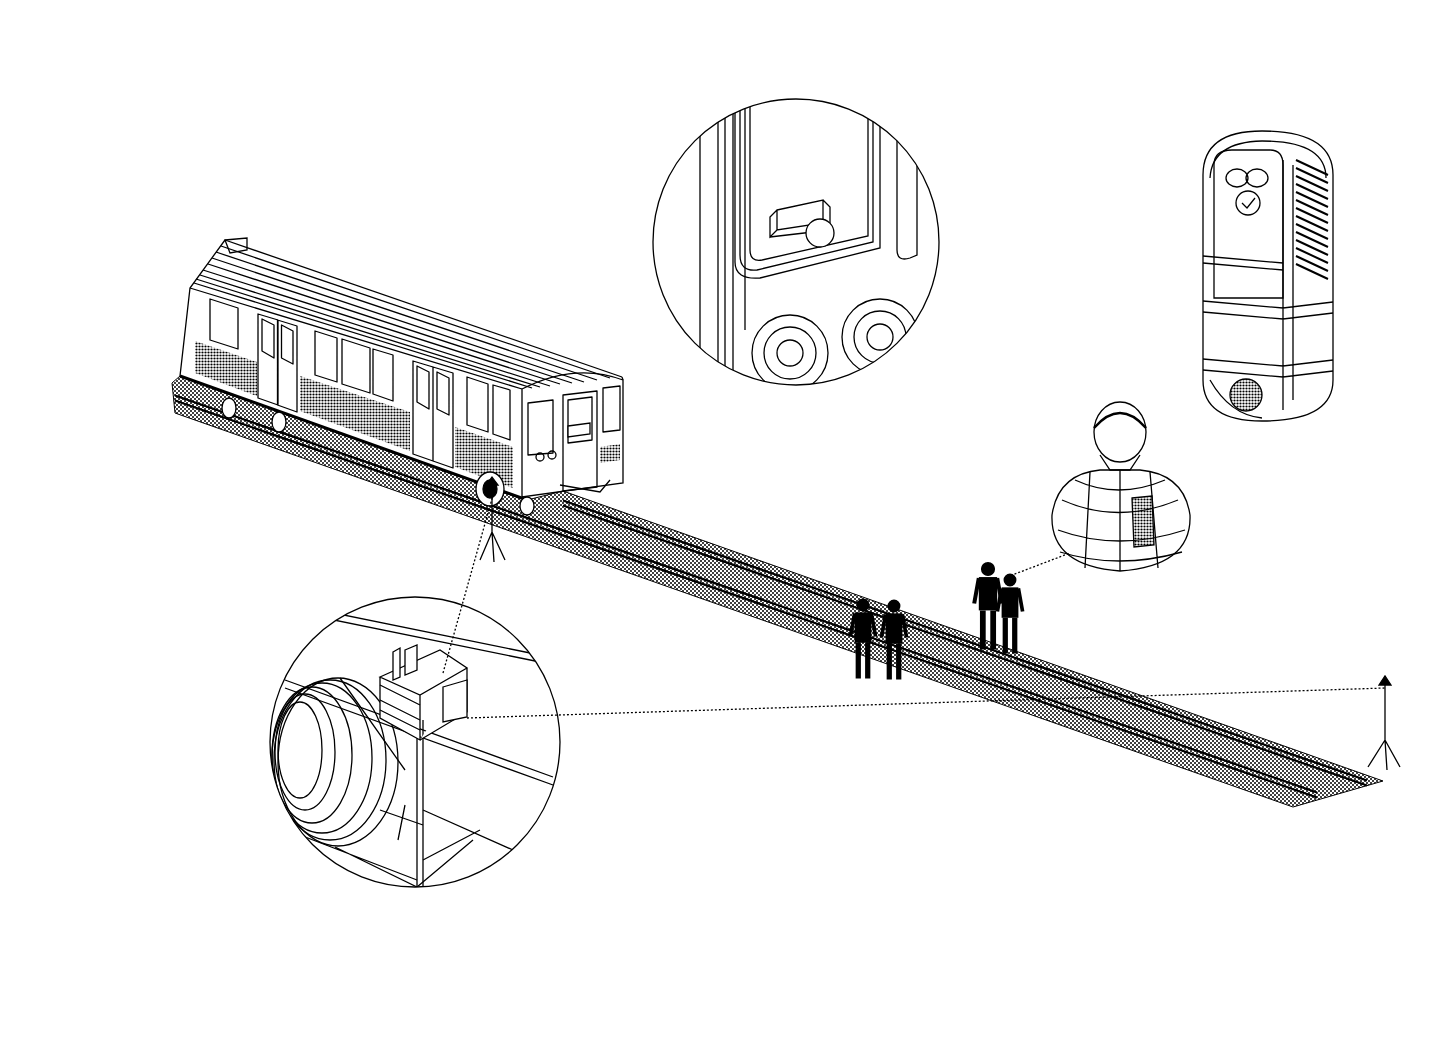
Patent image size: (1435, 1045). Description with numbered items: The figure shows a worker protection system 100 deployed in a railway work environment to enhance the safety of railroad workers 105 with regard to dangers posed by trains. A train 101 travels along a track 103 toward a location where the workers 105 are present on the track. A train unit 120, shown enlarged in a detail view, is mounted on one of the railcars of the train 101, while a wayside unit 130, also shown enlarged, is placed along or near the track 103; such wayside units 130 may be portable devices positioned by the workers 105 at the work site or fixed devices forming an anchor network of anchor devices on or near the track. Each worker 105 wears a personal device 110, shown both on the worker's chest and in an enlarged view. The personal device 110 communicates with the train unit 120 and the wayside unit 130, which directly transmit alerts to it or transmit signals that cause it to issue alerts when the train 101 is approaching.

The worker protection system 100 is at (214, 80).
The train 101 is at (472, 320).
The track 103 is at (731, 552).
The worker(s) 105 is at (1036, 495).
The personal device 110 is at (1246, 359).
The train unit 120 is at (573, 428).
The wayside unit 130 is at (827, 689).